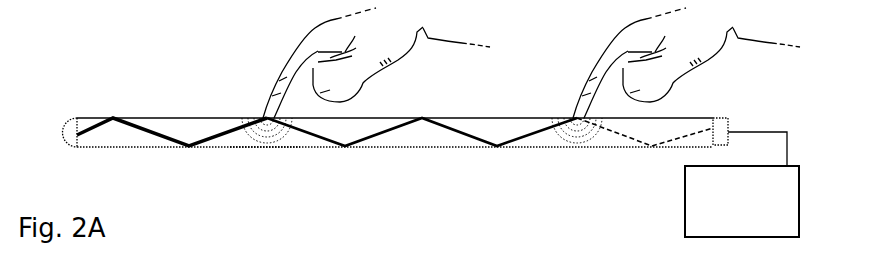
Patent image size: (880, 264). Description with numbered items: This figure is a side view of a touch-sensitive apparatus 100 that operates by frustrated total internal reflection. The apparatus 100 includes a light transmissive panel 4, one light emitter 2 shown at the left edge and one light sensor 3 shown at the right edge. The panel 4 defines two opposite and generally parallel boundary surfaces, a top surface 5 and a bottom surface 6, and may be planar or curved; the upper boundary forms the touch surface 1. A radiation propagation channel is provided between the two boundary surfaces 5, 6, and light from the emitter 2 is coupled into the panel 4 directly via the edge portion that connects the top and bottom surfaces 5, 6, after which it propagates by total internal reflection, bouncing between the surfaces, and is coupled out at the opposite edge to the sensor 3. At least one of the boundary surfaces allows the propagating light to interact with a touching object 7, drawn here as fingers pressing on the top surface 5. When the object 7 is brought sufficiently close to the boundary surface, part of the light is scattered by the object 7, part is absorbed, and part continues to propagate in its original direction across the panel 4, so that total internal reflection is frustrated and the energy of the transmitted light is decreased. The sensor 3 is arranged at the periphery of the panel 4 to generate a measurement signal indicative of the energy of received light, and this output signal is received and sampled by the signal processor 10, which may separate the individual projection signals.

The touch-sensitive apparatus 100 is at (122, 86).
The touch surface 1 is at (468, 118).
The light emitter 2 is at (75, 118).
The light sensor 3 is at (722, 118).
The light transmissive panel 4 is at (183, 128).
The top surface 5 is at (243, 119).
The bottom surface 6 is at (232, 150).
The touching object 7 is at (300, 50).
The signal processor 10 is at (685, 210).